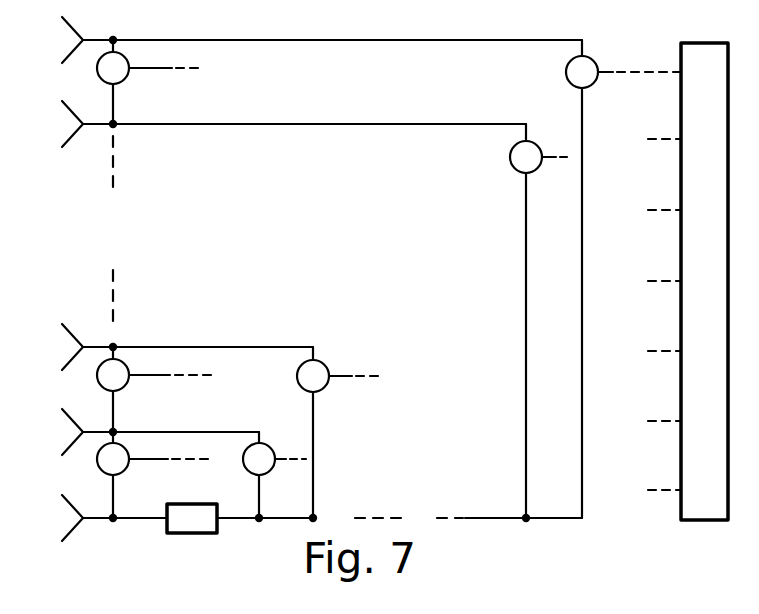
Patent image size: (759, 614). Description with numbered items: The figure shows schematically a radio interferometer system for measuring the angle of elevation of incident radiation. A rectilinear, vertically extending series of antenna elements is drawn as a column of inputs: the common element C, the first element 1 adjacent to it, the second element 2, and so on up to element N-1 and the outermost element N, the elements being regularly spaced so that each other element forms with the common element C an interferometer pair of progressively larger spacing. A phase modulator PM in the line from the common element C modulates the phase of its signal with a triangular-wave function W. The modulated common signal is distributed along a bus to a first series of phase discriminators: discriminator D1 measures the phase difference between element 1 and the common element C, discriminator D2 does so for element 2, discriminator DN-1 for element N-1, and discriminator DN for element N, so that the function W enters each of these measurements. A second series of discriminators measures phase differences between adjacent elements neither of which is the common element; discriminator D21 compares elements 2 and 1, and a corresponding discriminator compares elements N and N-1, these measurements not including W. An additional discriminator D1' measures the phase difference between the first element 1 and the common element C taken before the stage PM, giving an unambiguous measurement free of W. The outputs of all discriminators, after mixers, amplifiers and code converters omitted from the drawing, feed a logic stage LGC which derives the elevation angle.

The antenna element N is at (313, 40).
The antenna element N-1 is at (274, 124).
The antenna element 2 is at (179, 347).
The antenna element 1 is at (153, 432).
The common antenna element C is at (313, 518).
The phase discriminator DN is at (623, 279).
The phase discriminator DN-1 is at (541, 321).
The phase discriminator D21 is at (154, 389).
The phase discriminator D2 is at (338, 432).
The phase discriminator D1 is at (274, 475).
The additional phase discriminator D1' is at (153, 475).
The phase modulator PM is at (192, 518).
The logic stage LGC is at (688, 281).